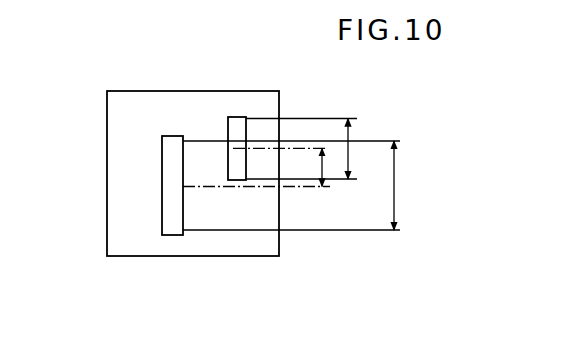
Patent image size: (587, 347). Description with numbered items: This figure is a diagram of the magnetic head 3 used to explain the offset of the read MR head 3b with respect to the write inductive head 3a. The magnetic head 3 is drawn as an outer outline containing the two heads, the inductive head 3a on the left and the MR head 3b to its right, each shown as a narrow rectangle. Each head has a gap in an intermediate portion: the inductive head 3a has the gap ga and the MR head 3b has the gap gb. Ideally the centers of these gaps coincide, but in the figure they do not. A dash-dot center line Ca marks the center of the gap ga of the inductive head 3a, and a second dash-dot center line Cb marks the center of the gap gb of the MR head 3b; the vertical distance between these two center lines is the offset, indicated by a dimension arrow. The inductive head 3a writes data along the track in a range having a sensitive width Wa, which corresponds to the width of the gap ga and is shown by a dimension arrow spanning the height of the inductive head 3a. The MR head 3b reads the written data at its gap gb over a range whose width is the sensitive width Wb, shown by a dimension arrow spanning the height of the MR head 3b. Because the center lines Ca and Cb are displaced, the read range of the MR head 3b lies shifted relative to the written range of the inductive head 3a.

The magnetic head 3 is at (137, 91).
The write inductive head 3a is at (171, 136).
The read MR head 3b is at (235, 117).
The gap of the inductive head ga is at (180, 186).
The gap of the MR head gb is at (239, 148).
The center line of the gap ga Ca is at (313, 187).
The center line of the gap gb Cb is at (292, 147).
The sensitive width of the inductive head Wa is at (385, 185).
The sensitive width of the MR head Wb is at (349, 155).